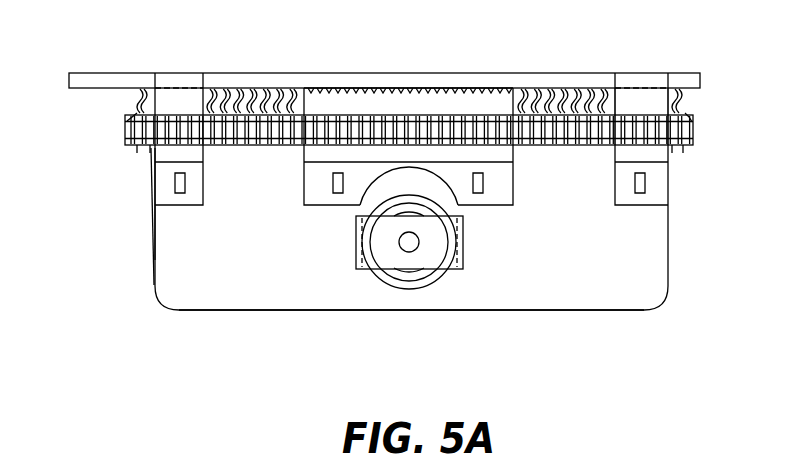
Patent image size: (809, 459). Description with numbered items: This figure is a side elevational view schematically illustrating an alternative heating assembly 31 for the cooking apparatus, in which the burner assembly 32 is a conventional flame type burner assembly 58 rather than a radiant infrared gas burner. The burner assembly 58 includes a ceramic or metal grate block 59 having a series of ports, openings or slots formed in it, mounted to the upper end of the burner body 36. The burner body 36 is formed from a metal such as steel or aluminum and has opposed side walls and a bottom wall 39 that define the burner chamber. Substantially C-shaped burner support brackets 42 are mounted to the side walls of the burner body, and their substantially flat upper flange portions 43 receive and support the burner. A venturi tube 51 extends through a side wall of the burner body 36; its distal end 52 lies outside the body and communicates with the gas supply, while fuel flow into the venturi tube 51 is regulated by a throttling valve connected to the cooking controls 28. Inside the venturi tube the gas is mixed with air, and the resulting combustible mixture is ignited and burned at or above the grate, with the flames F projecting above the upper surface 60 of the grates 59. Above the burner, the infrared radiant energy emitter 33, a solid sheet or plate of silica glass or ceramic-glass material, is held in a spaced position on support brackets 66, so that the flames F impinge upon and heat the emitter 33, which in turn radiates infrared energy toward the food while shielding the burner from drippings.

The heating assembly 31 is at (183, 335).
The radiant burner assembly 32 is at (145, 232).
The infrared radiant energy emitter 33 is at (100, 72).
The burner body 36 is at (595, 313).
The bottom wall 39 is at (325, 295).
The burner support brackets 42 is at (497, 176).
The upper flange portions 43 is at (304, 152).
The venturi tube 51 is at (410, 288).
The distal end 52 is at (380, 272).
The cooking controls 28 is at (427, 257).
The flame type burner assembly 58 is at (384, 134).
The grate block 59 is at (695, 131).
The upper surface 60 is at (137, 115).
The support brackets 66 is at (652, 100).
The flames F is at (537, 88).